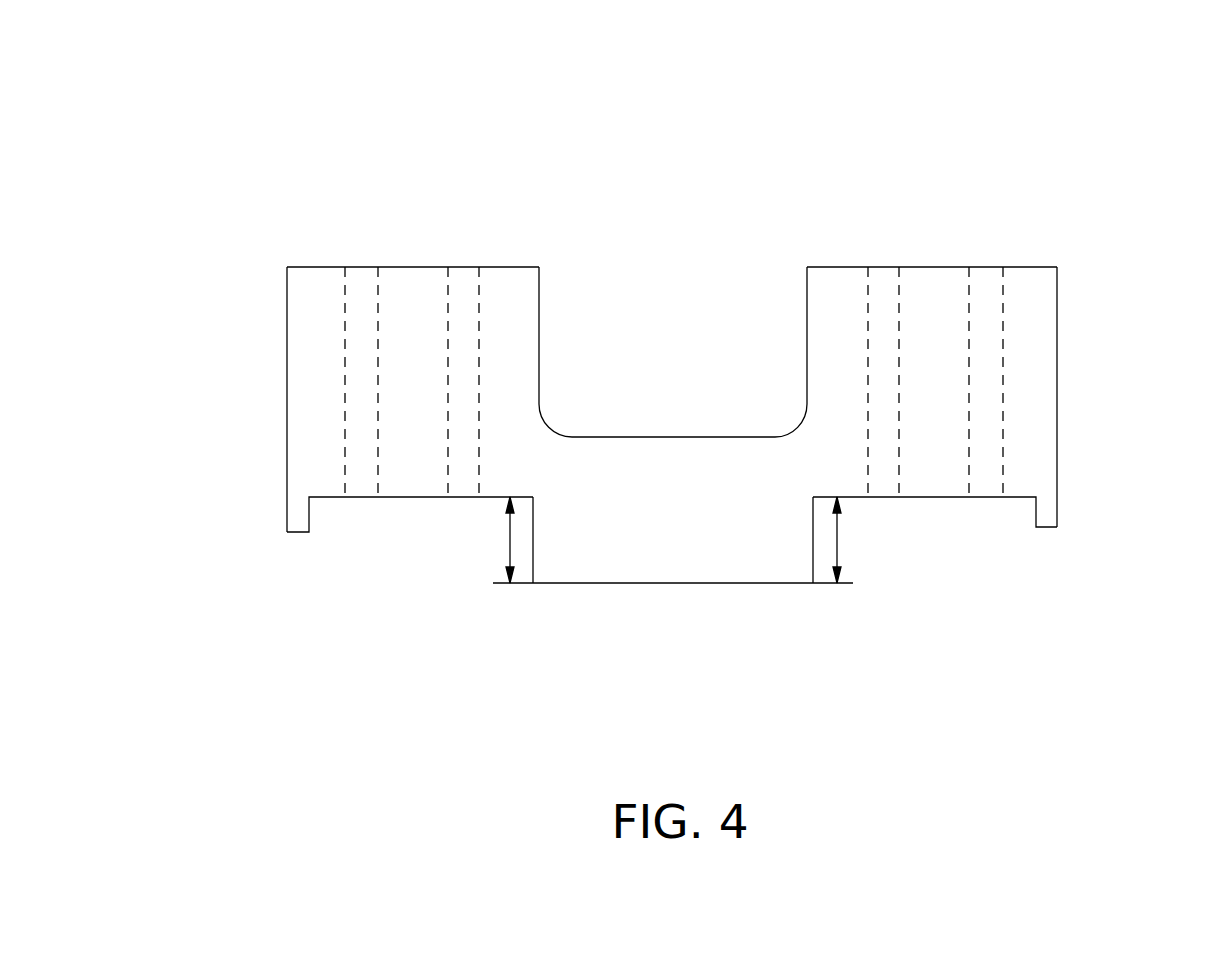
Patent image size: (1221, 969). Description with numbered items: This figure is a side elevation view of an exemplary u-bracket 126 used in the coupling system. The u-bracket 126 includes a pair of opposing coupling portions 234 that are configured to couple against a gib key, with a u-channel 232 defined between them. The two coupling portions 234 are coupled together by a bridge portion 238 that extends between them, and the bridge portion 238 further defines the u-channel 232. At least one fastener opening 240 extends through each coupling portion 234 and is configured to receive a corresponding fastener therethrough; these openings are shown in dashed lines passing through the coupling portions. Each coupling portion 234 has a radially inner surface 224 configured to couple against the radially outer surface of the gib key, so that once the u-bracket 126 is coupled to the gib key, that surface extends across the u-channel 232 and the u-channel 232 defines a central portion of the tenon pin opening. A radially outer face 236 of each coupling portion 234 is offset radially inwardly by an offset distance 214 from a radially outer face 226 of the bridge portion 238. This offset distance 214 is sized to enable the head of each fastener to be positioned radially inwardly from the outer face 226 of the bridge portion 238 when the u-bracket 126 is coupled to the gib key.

The u-bracket 126 is at (895, 135).
The radially inner surface 224 is at (414, 267).
The u-channel 232 is at (676, 266).
The coupling portion 234 is at (258, 387).
The radially outer face of coupling portion 236 is at (332, 497).
The bridge portion 238 is at (608, 571).
The radially outer face of bridge portion 226 is at (732, 587).
The fastener opening 240 is at (892, 247).
The offset distance 214 is at (508, 547).